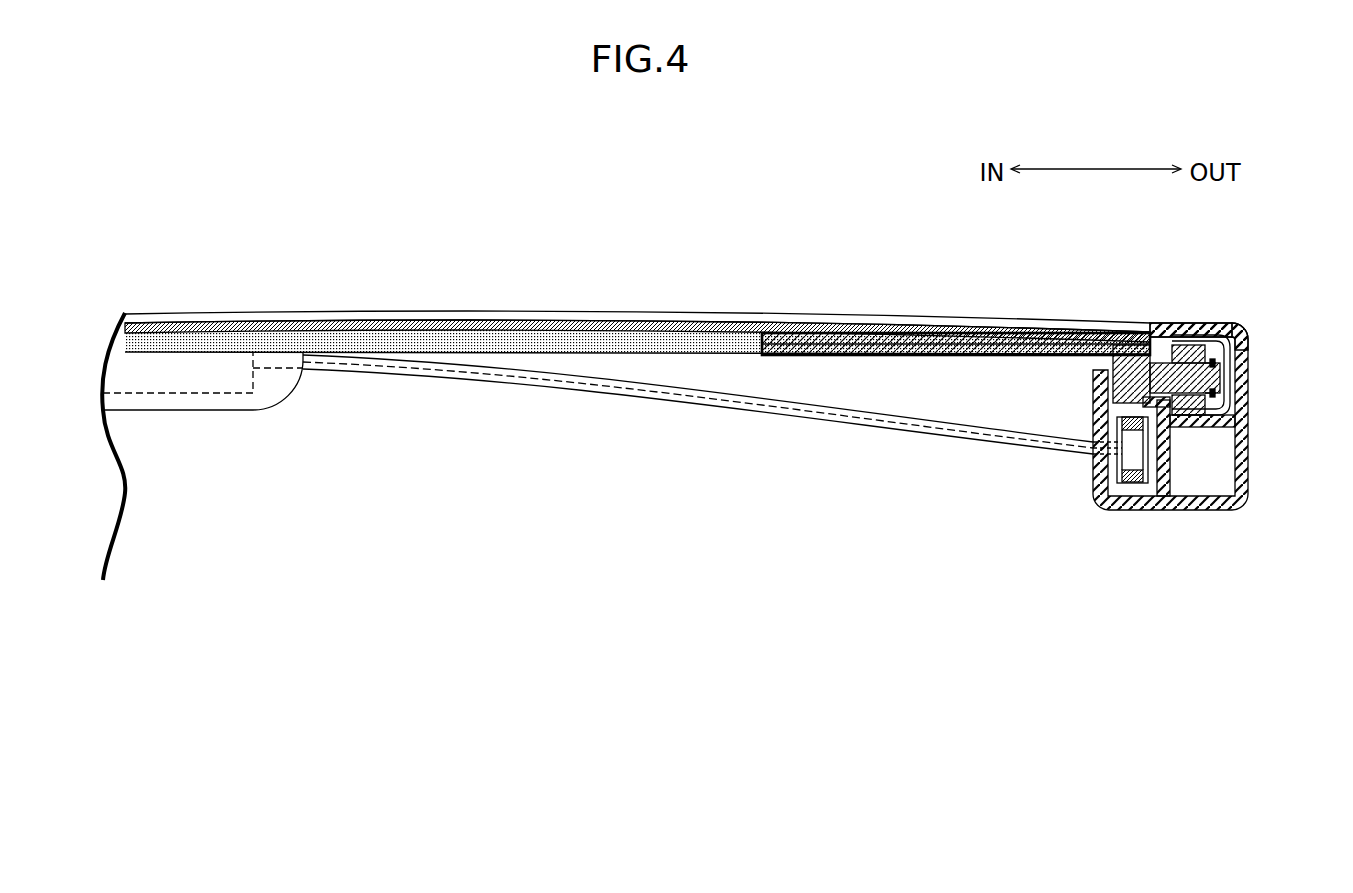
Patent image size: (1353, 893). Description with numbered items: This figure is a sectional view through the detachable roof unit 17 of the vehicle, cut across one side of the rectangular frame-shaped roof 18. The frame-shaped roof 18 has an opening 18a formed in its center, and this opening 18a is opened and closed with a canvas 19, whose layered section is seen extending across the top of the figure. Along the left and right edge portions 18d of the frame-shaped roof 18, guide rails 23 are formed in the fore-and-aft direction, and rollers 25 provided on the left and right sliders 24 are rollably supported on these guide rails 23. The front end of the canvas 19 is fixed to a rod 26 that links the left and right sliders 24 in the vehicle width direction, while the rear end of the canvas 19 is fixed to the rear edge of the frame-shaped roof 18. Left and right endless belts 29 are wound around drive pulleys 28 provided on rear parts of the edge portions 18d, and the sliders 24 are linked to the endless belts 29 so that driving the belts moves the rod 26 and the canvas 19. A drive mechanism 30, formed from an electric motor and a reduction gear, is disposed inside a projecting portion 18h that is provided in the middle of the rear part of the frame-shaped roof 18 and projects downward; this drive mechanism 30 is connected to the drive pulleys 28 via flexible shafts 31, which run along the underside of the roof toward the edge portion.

The roof unit 17 is at (735, 290).
The frame-shaped roof 18 is at (1188, 316).
The opening 18a is at (1142, 323).
The edge portions 18d is at (1240, 385).
The projecting portion 18h is at (240, 410).
The canvas 19 is at (497, 340).
The guide rails 23 is at (1208, 410).
The sliders 24 is at (1128, 385).
The rollers 25 is at (1210, 328).
The rod 26 is at (885, 355).
The drive pulleys 28 is at (1128, 458).
The endless belts 29 is at (1130, 483).
The drive mechanism 30 is at (148, 393).
The flexible shafts 31 is at (782, 420).